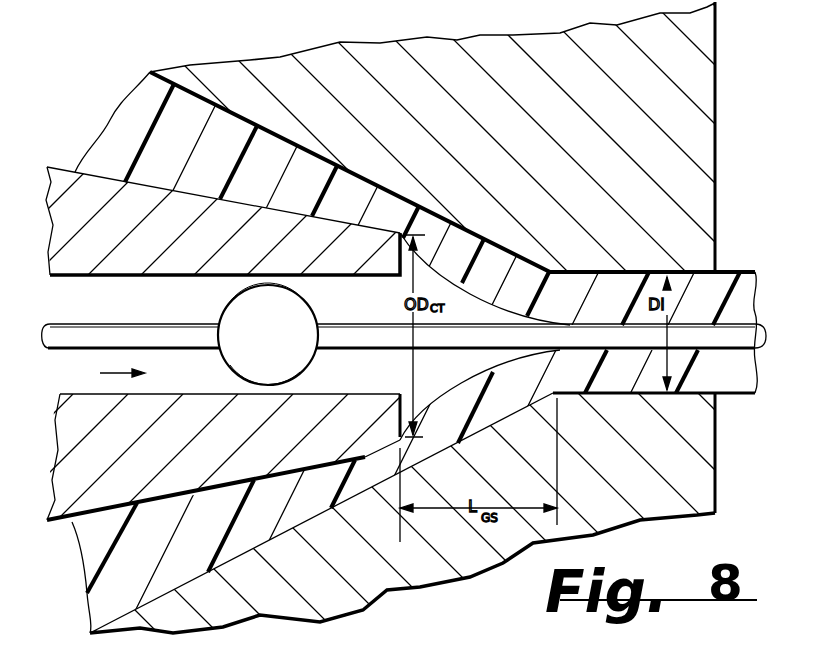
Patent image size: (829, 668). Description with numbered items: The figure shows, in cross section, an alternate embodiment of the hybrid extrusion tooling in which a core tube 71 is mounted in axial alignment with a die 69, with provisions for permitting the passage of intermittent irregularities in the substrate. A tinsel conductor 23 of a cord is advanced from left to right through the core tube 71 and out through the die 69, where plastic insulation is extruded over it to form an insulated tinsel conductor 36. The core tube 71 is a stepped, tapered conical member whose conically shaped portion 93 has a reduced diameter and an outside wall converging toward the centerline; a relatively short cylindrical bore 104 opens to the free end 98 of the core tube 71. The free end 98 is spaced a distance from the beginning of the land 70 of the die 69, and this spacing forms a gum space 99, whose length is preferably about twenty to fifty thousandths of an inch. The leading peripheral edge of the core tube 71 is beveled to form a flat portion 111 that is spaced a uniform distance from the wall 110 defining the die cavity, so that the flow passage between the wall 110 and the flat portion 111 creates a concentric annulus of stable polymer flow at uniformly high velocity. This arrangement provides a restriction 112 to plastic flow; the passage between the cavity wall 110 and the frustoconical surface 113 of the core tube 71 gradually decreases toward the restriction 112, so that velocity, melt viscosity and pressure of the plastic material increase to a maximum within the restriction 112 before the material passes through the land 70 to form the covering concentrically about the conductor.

The tinsel conductor 23 is at (130, 297).
The insulated tinsel conductor 36 is at (722, 272).
The die 69 is at (717, 107).
The land 70 is at (613, 277).
The core tube 71 is at (170, 181).
The conically shaped portion 93 is at (147, 193).
The free end 98 is at (402, 408).
The gum space 99 is at (500, 263).
The cylindrical bore 104 is at (345, 278).
The wall 110 is at (458, 232).
The flat portion 111 is at (407, 213).
The restriction 112 is at (392, 212).
The frustoconical surface 113 is at (250, 197).